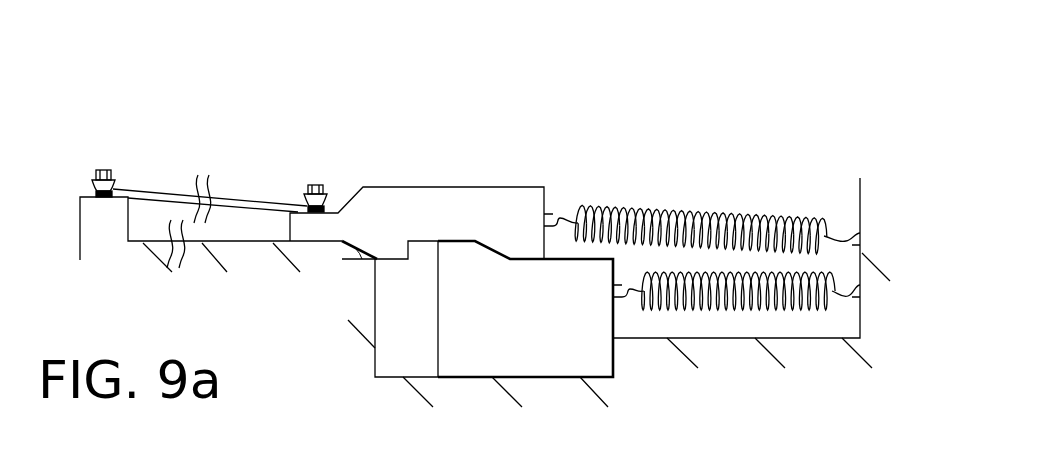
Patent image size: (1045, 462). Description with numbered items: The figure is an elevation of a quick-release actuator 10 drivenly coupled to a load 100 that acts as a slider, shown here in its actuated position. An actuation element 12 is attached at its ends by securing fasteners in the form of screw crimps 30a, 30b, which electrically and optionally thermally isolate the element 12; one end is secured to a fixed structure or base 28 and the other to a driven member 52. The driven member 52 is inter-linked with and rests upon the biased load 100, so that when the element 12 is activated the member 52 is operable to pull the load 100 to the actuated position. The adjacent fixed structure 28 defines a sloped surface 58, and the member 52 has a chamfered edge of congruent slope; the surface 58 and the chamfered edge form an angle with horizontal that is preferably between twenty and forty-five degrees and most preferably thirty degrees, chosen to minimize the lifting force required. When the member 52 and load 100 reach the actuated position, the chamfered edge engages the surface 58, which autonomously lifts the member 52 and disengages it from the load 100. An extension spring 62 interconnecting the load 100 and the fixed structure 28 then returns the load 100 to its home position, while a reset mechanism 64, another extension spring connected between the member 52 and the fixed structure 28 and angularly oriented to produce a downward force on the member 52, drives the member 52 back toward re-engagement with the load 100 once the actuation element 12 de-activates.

The actuator 10 is at (851, 104).
The actuation element 12 is at (243, 198).
The fixed structure 28 is at (375, 360).
The screw crimp 30a is at (93, 190).
The screw crimp 30b is at (328, 197).
The driven member 52 is at (492, 187).
The sloped surface 58 is at (343, 243).
The extension spring 62 is at (812, 312).
The reset mechanism 64 is at (725, 212).
The load 100 is at (613, 323).